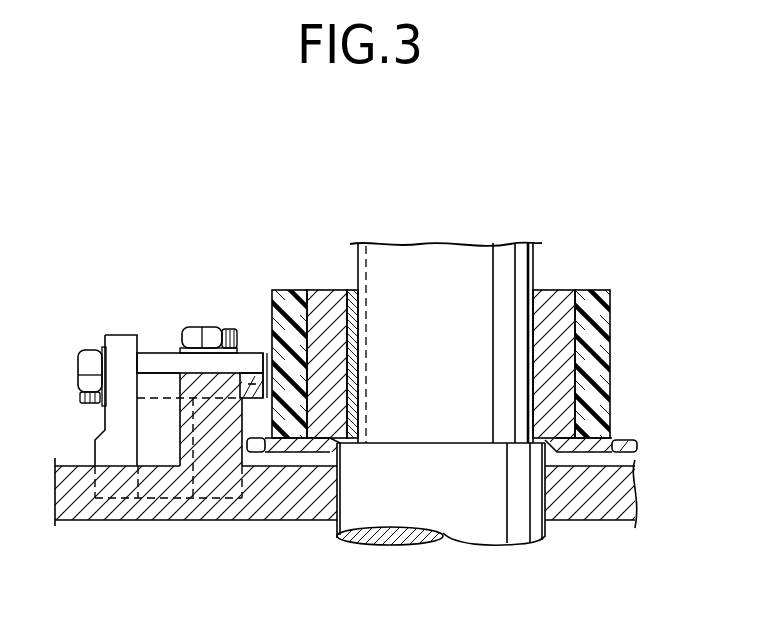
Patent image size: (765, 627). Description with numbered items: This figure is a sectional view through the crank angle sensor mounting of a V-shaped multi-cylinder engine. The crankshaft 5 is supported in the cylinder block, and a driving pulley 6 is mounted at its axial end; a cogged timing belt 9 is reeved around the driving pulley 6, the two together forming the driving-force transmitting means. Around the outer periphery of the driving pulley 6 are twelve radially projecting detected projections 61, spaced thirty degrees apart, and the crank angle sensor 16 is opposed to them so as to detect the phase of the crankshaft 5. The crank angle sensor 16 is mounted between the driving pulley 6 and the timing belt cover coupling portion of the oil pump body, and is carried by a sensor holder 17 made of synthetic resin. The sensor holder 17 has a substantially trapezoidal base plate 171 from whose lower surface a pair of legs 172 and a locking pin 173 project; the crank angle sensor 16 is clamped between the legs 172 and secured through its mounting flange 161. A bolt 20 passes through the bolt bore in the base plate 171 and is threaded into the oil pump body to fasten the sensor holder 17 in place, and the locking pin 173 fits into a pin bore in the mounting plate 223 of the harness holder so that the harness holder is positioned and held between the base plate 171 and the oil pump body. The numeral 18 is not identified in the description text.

The crankshaft 5 is at (528, 520).
The driving pulley 6 is at (561, 278).
The detected projections 61 is at (670, 423).
The timing belt 9 is at (600, 318).
The crank angle sensor 16 is at (217, 506).
The mounting flange 161 is at (118, 340).
The sensor holder 17 is at (157, 340).
The base plate 171 is at (253, 362).
The legs 172 is at (160, 507).
The locking pin 173 is at (243, 380).
The nut 18 is at (86, 378).
The bolt 20 is at (203, 337).
The mounting plate 223 is at (257, 385).